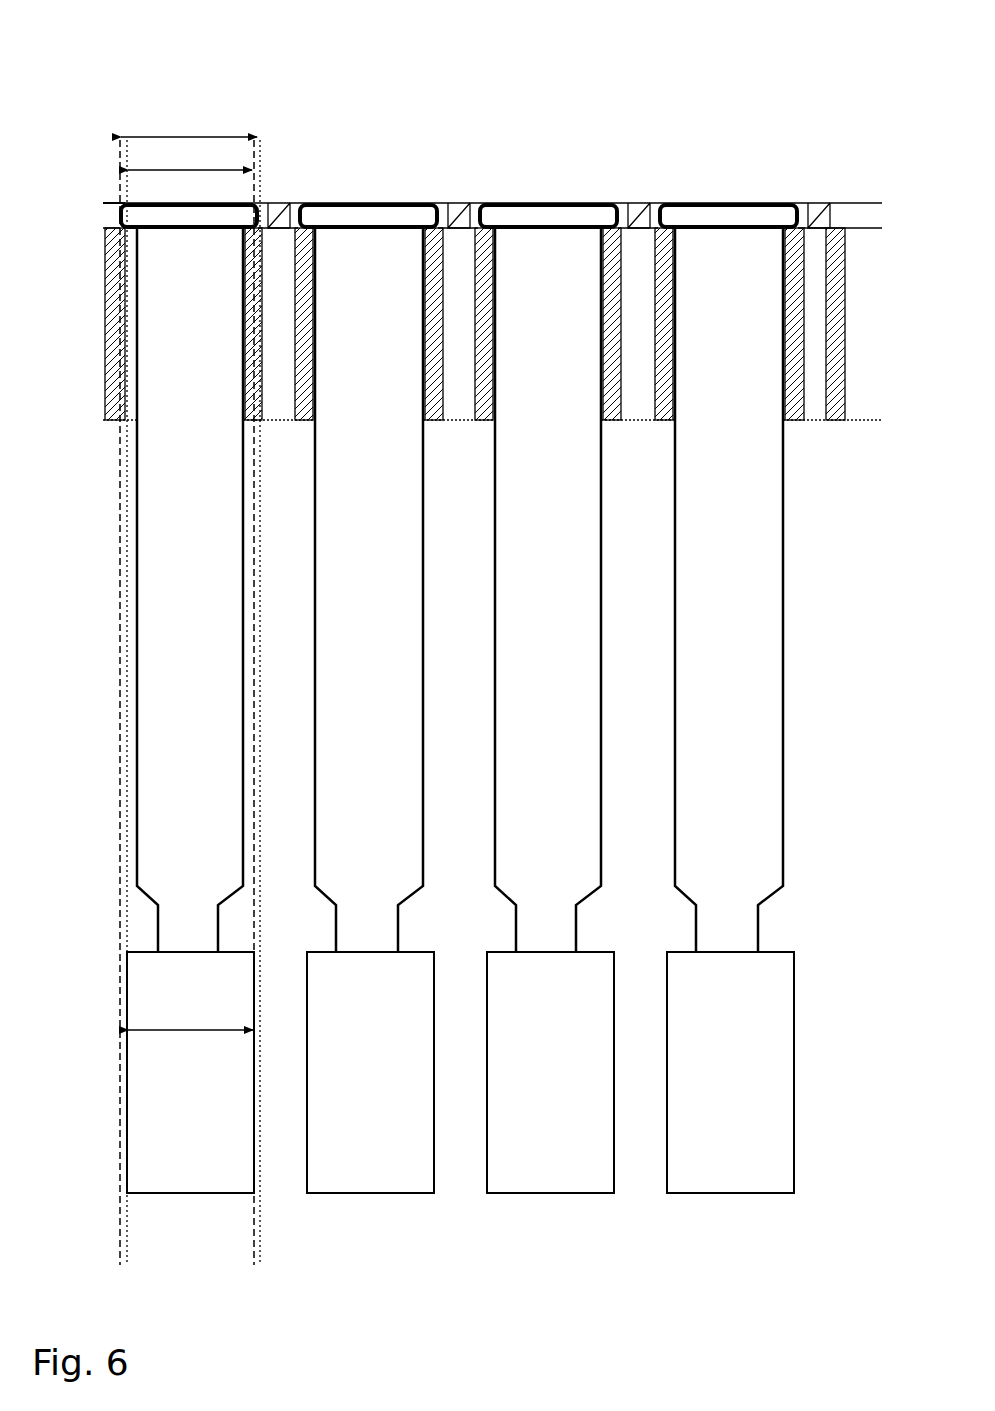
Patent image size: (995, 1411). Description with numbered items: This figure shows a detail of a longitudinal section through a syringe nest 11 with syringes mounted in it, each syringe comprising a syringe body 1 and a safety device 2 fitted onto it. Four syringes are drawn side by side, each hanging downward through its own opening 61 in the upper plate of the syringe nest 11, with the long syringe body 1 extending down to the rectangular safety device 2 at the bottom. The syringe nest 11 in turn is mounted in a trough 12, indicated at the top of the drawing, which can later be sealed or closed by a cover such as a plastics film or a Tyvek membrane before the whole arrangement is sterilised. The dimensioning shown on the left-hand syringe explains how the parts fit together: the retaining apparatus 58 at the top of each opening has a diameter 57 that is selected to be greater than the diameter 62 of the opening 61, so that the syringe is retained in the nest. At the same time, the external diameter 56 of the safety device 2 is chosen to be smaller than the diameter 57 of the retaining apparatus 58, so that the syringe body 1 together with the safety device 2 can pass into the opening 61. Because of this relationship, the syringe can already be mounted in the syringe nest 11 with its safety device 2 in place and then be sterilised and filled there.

The syringe body 1 is at (165, 840).
The safety device 2 is at (160, 1087).
The syringe nest 11 is at (288, 205).
The trough 12 is at (492, 311).
The external diameter 56 is at (150, 1030).
The diameter of the retaining apparatus 57 is at (163, 137).
The retaining apparatus 58 is at (140, 218).
The opening 61 is at (265, 80).
The diameter of the opening 62 is at (215, 170).